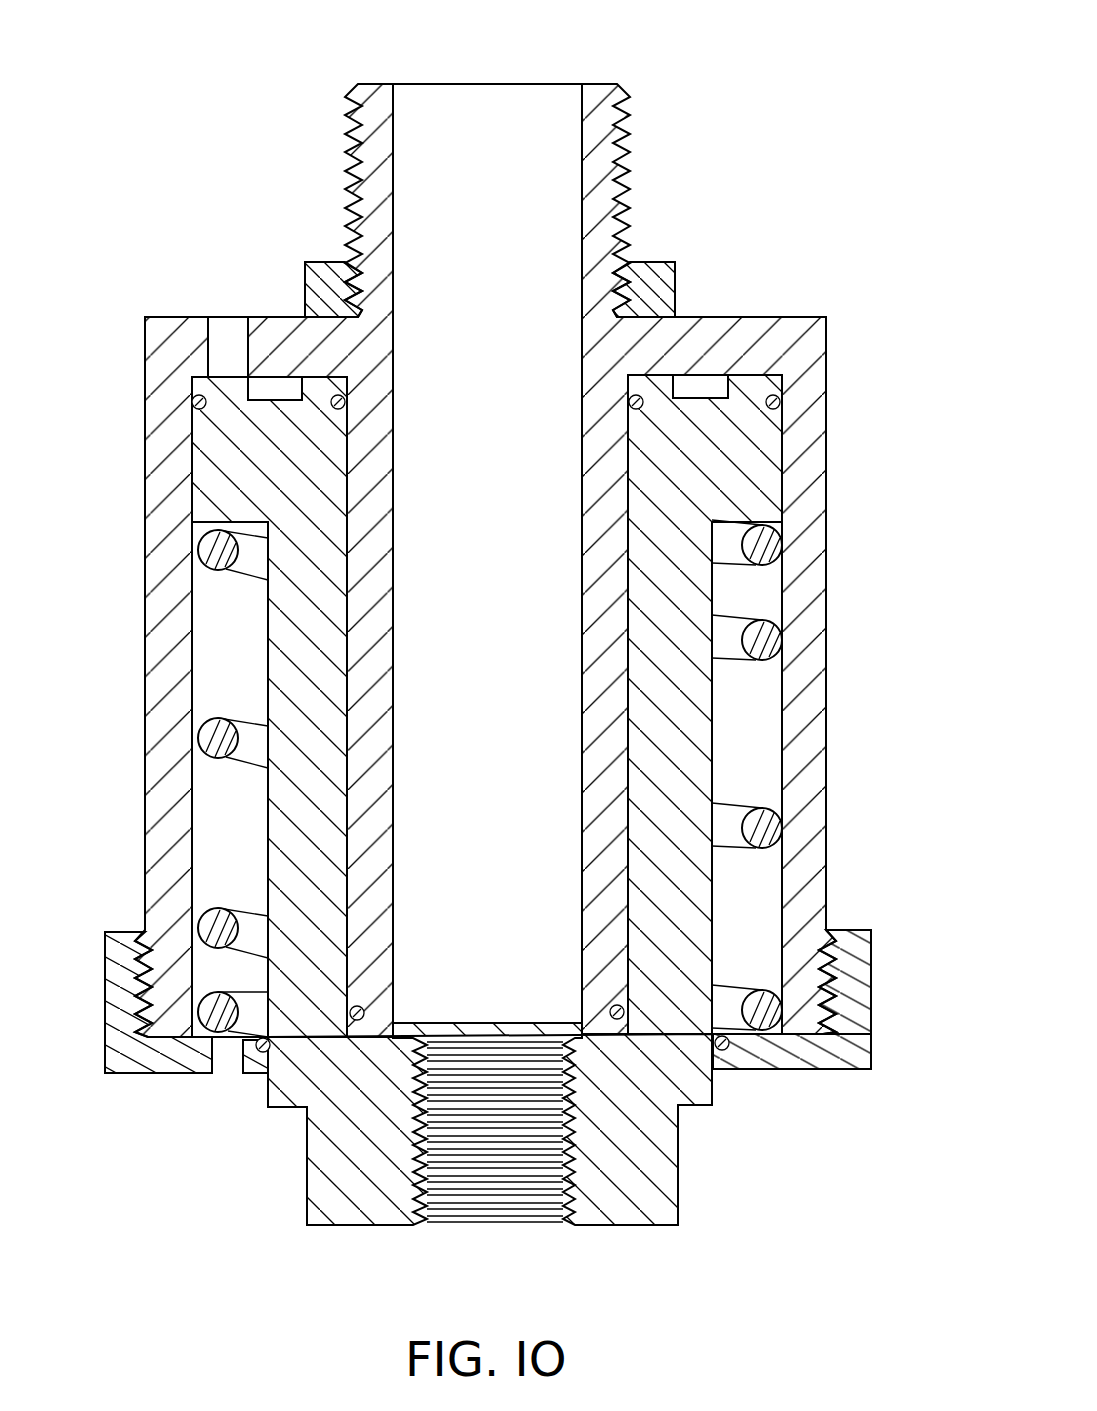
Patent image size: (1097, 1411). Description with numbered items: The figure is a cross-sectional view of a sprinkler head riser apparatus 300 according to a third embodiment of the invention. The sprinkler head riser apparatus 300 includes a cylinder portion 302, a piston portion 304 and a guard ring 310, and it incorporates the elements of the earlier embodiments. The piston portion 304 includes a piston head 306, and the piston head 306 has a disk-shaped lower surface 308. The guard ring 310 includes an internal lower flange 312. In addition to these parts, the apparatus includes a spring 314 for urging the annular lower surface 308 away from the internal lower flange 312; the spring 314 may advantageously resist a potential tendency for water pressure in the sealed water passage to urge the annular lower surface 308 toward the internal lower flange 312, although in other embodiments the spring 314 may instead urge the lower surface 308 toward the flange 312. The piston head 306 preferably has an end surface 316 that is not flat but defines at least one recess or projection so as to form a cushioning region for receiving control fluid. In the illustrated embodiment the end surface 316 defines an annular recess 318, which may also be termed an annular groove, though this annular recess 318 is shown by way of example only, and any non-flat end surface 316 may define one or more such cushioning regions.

The sprinkler head riser apparatus 300 is at (644, 66).
The cylinder portion 302 is at (765, 328).
The piston portion 304 is at (712, 425).
The piston head 306 is at (368, 713).
The disk-shaped lower surface 308 is at (403, 778).
The guard ring 310 is at (822, 1012).
The internal lower flange 312 is at (777, 1050).
The spring 314 is at (215, 740).
The end surface 316 is at (200, 375).
The annular recess 318 is at (282, 388).